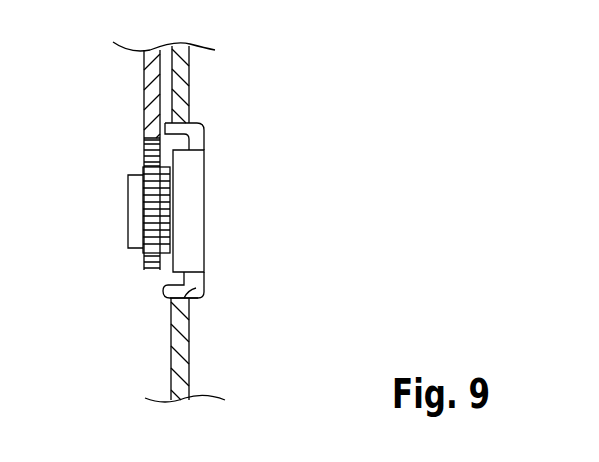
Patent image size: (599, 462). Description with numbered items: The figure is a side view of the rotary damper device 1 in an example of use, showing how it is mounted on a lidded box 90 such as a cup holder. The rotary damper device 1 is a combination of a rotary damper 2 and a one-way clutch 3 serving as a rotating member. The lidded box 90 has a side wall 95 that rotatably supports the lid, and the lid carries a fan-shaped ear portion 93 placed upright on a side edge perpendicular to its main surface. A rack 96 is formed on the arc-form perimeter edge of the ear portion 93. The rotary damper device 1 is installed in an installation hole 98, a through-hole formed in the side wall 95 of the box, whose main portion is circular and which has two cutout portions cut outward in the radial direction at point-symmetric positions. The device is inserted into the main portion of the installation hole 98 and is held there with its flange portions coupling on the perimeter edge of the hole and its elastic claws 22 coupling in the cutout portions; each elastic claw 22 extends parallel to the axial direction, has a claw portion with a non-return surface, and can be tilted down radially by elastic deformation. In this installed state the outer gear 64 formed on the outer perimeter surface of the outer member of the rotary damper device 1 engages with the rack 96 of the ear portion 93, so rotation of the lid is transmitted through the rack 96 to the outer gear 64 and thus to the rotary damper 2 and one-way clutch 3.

The rotary damper device 1 is at (225, 207).
The rotary damper 2 is at (207, 232).
The one-way clutch 3 is at (127, 226).
The elastic claw 22 is at (206, 128).
The outer gear 64 is at (146, 192).
The lidded box 90 is at (190, 82).
The ear portion 93 is at (150, 88).
The side wall 95 is at (191, 345).
The rack 96 is at (150, 150).
The installation hole 98 is at (206, 296).